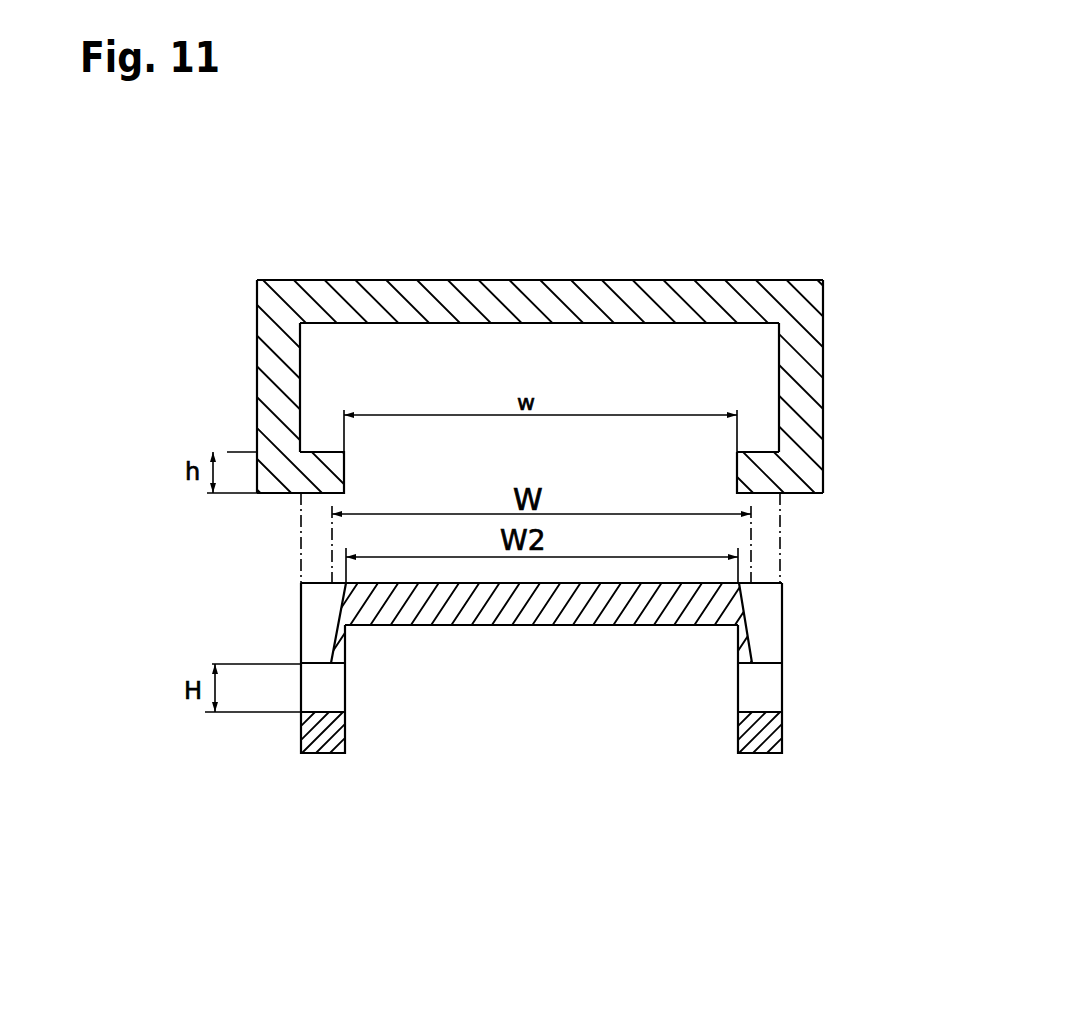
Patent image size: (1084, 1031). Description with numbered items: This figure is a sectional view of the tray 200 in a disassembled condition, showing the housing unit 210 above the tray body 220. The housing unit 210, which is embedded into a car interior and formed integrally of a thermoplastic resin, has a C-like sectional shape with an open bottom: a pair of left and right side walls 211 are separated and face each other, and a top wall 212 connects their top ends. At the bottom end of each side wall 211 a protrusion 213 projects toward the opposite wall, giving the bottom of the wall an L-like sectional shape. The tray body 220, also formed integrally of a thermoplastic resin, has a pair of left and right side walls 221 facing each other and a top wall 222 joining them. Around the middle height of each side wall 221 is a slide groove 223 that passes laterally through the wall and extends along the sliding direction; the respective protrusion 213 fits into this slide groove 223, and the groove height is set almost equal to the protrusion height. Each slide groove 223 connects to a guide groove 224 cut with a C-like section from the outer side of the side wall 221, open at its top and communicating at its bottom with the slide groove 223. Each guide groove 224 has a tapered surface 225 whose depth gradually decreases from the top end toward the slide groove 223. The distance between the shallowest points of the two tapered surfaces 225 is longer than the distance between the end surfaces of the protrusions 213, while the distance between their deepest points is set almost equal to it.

The tray 200 is at (356, 104).
The housing unit 210 is at (843, 234).
The side walls 211 is at (267, 362).
The top wall 212 is at (530, 287).
The protrusions 213 is at (318, 490).
The tray body 220 is at (824, 831).
The side walls 221 is at (323, 745).
The top wall 222 is at (537, 628).
The slide groove 223 is at (333, 700).
The guide groove 224 is at (312, 623).
The tapered surface 225 is at (746, 598).